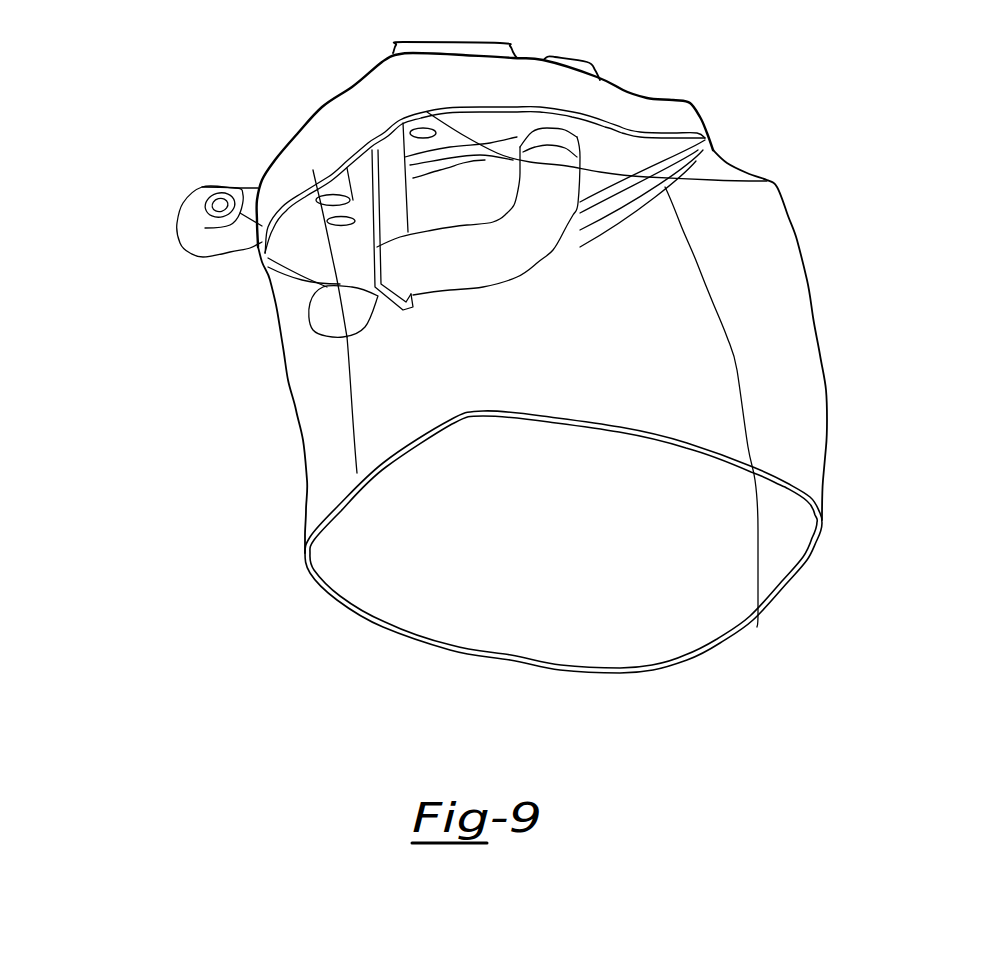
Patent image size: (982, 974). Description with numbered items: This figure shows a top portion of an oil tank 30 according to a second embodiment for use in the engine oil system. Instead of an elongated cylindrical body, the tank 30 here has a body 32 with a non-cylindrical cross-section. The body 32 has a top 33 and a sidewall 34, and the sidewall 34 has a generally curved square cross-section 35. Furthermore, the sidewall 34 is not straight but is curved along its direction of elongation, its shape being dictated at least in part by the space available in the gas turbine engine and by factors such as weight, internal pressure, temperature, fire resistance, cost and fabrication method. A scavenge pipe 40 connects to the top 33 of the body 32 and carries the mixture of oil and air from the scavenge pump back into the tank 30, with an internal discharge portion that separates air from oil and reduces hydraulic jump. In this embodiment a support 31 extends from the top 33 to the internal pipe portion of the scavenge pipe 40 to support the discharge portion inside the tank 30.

The tank 30 is at (128, 148).
The support 31 is at (367, 250).
The body 32 is at (297, 442).
The top 33 is at (320, 107).
The sidewall 34 is at (813, 303).
The curved square cross-section 35 is at (327, 600).
The scavenge pipe 40 is at (557, 190).